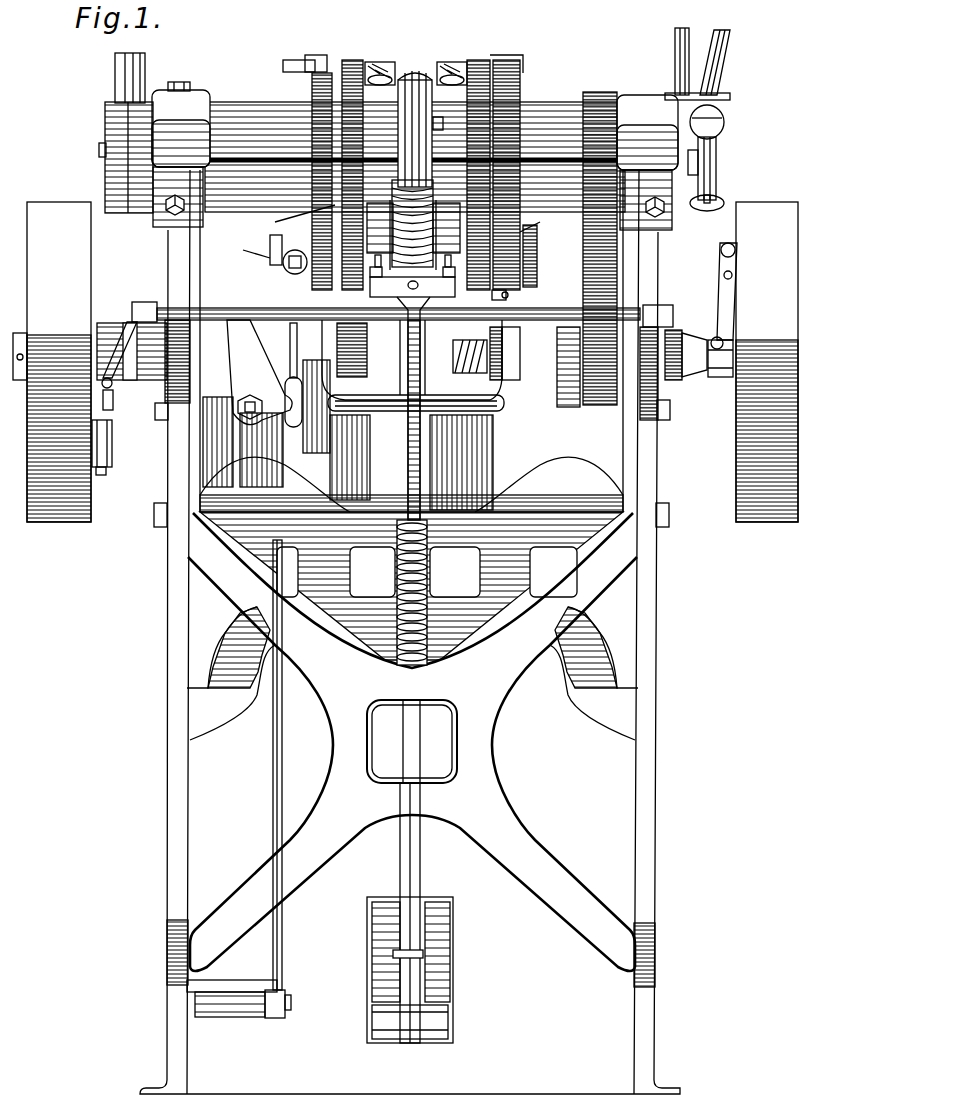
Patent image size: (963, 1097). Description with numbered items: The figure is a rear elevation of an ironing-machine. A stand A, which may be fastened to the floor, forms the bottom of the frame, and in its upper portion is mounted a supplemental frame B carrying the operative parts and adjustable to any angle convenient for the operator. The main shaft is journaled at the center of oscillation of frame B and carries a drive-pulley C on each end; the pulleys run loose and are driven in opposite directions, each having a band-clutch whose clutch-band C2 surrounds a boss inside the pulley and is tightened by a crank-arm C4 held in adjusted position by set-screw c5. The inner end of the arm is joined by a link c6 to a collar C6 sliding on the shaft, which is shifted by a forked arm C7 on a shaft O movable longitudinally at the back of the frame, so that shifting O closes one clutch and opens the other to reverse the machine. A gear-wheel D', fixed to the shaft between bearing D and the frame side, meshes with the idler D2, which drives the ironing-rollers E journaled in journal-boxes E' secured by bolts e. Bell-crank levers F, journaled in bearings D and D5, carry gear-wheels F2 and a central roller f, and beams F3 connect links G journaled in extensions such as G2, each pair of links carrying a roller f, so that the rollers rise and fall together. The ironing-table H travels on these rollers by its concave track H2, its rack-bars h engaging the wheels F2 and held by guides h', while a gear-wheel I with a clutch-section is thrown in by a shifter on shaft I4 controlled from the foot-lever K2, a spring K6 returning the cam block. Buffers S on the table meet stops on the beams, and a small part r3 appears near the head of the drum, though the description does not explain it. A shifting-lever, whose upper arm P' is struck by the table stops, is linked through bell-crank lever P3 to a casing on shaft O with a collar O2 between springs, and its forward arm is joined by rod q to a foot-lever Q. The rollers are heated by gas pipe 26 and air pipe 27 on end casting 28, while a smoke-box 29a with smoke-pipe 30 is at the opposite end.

The stand or bottom portion of the frame A is at (168, 662).
The supplemental frame B is at (372, 452).
The drive-pulley C is at (405, 362).
The clutch block C' is at (130, 325).
The clutch-band C2 is at (377, 370).
The crank-arm C4 is at (112, 420).
The set-screw c5 is at (104, 470).
The link c6 is at (113, 386).
The collar C6 is at (698, 377).
The forked arm C7 is at (680, 328).
The bearing D is at (549, 367).
The gear-wheel D' is at (640, 313).
The idler D2 is at (617, 250).
The bearing D5 is at (310, 430).
The ironing-roller E is at (415, 157).
The journal-box E' is at (415, 115).
The bolt e is at (175, 215).
The bell-crank lever F is at (305, 53).
The gear-wheel F2 is at (515, 275).
The beam F3 is at (408, 218).
The roller f is at (413, 225).
The link G is at (392, 300).
The rear extension G2 is at (470, 362).
The ironing-table H is at (512, 72).
The concave track H2 is at (413, 70).
The rack-bar h is at (401, 175).
The guide h' is at (417, 256).
The gear-wheel I is at (367, 350).
The shaft I4 is at (495, 403).
The foot-lever K2 is at (428, 855).
The spring K6 is at (430, 561).
The shaft O is at (213, 308).
The collar O2 is at (293, 275).
The upper arm of shifting-lever P' is at (246, 254).
The bell-crank lever P3 is at (245, 395).
The foot-lever Q is at (250, 998).
The rod q is at (273, 745).
The pin r3 is at (438, 117).
The buffer S is at (378, 62).
The gas pipe 26 is at (678, 45).
The air pipe 27 is at (726, 52).
The end casting 28 is at (725, 108).
The smoke-box 29a is at (118, 127).
The smoke-pipe 30 is at (115, 87).